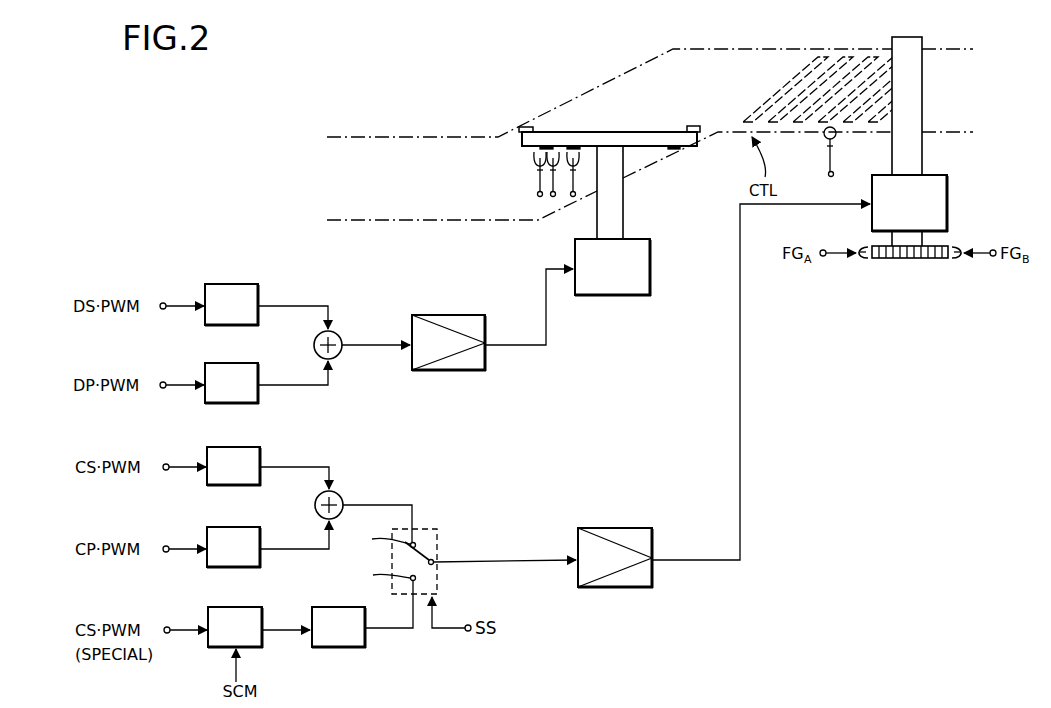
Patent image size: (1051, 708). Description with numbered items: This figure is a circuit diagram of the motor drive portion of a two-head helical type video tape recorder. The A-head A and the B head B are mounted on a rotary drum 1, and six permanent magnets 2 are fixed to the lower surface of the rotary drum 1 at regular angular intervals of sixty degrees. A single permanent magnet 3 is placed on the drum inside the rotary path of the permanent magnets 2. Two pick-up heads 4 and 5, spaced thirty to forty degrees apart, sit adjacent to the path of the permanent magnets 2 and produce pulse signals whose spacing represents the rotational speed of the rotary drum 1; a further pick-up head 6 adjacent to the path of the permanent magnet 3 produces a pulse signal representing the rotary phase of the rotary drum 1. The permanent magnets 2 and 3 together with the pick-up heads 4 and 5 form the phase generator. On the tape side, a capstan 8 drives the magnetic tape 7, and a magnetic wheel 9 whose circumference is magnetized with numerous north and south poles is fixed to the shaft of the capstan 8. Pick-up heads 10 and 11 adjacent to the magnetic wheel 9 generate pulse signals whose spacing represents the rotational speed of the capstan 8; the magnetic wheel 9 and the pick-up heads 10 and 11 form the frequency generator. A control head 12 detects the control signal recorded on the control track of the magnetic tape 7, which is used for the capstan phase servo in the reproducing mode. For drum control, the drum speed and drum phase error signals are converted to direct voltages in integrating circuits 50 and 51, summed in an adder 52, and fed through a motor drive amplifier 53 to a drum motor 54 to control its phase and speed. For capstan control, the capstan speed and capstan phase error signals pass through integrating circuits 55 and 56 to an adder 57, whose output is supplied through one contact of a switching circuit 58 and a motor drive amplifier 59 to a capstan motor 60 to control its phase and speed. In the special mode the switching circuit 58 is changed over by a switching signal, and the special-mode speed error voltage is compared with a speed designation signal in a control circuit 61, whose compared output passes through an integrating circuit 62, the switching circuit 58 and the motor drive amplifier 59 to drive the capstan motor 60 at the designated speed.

The rotary drum 1 is at (638, 137).
The permanent magnets 2 is at (548, 146).
The permanent magnet 3 is at (577, 146).
The pick-up head 4 is at (534, 160).
The pick-up head 5 is at (558, 160).
The pick-up head 6 is at (579, 158).
The magnetic tape 7 is at (797, 48).
The capstan 8 is at (915, 112).
The magnetic wheel 9 is at (915, 260).
The pick-up head 10 is at (862, 262).
The pick-up head 11 is at (958, 262).
The CTL head 12 is at (825, 140).
The A-head A is at (525, 128).
The B head B is at (697, 130).
The integrating circuit 50 is at (243, 290).
The integrating circuit 51 is at (245, 372).
The adder 52 is at (341, 338).
The motor drive amplifier 53 is at (466, 320).
The drum motor 54 is at (645, 268).
The integrating circuit 55 is at (247, 455).
The integrating circuit 56 is at (248, 536).
The adder 57 is at (343, 497).
The switching circuit 58 is at (435, 527).
The motor drive amplifier 59 is at (633, 533).
The capstan motor 60 is at (940, 207).
The control circuit 61 is at (255, 616).
The integrating circuit 62 is at (348, 612).